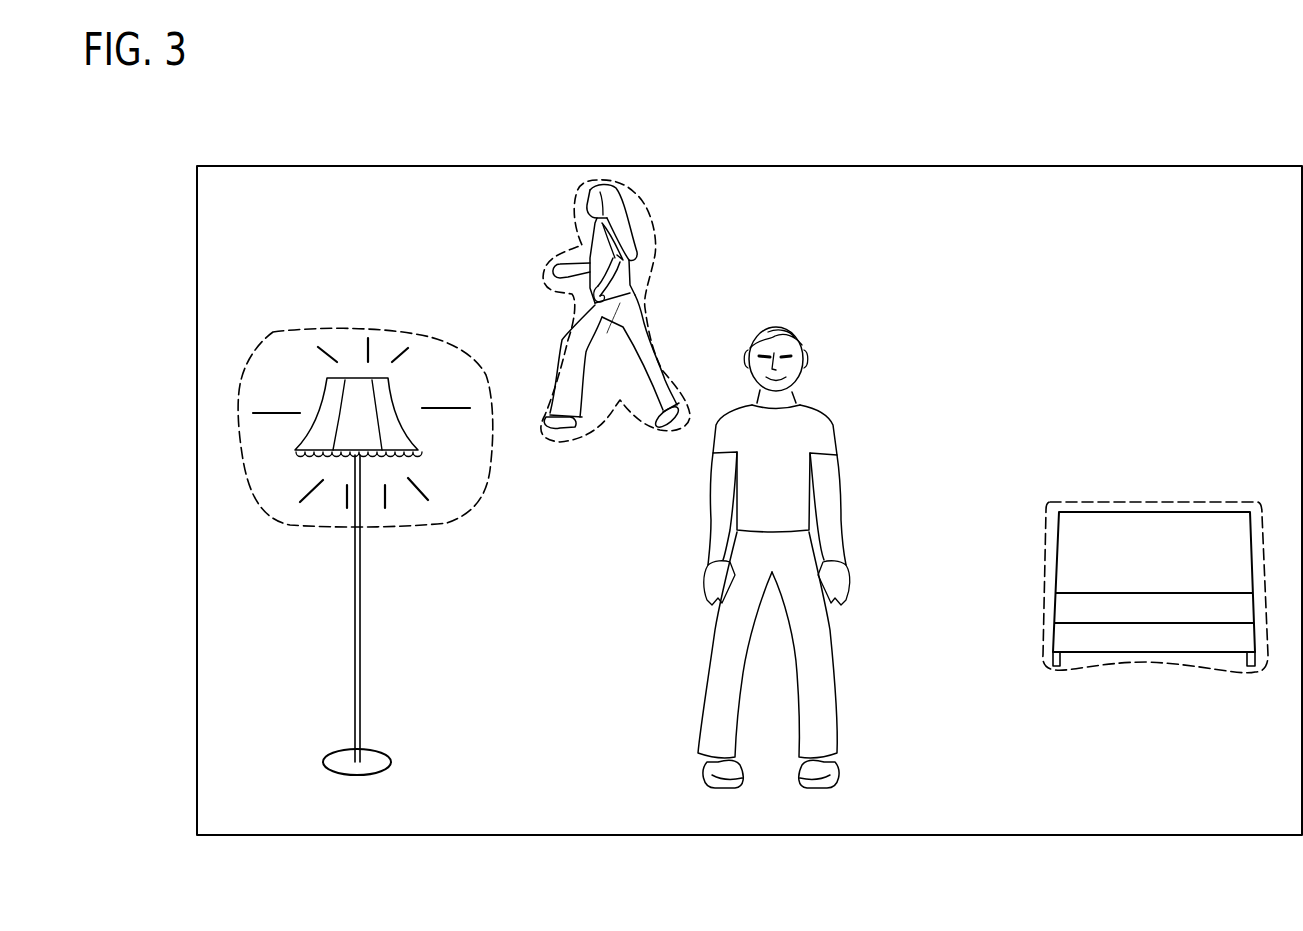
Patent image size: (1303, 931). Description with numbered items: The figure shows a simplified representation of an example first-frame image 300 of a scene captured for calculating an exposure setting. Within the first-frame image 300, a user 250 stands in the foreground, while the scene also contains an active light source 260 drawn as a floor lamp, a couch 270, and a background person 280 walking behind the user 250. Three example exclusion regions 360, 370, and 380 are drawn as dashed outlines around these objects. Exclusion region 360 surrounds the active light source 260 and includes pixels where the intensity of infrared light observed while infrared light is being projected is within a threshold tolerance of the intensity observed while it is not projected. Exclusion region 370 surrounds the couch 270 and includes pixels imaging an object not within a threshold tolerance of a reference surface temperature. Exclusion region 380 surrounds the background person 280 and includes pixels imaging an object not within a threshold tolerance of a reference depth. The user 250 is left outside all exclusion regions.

The first-frame image 300 is at (189, 158).
The user 250 is at (793, 495).
The active light source 260 is at (410, 437).
The couch 270 is at (1183, 574).
The background person 280 is at (612, 307).
The exclusion region 360 is at (346, 332).
The exclusion region 370 is at (1073, 502).
The exclusion region 380 is at (646, 222).